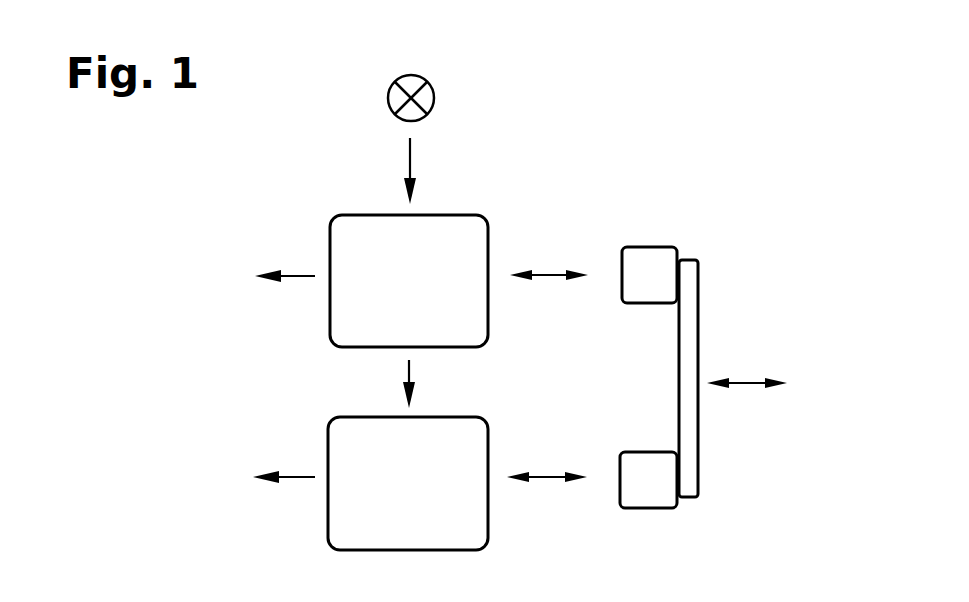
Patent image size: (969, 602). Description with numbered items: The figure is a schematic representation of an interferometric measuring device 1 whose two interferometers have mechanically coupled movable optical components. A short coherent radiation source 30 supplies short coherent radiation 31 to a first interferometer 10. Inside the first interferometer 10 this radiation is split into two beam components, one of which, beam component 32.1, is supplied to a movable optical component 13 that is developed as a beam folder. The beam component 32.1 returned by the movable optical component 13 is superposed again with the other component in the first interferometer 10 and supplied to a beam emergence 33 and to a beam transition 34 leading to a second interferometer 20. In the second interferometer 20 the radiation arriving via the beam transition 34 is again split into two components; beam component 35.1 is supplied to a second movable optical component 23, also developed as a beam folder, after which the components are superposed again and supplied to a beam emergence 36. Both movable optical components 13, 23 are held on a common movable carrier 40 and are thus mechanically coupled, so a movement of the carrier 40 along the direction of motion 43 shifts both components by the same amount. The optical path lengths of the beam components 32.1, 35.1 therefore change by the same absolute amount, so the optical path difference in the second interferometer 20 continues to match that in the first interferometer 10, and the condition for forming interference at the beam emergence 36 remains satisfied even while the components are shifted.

The interferometric measuring device 1 is at (514, 178).
The first interferometer 10 is at (330, 228).
The movable optical component 13 is at (650, 245).
The second interferometer 20 is at (328, 430).
The movable optical component 23 is at (672, 507).
The short coherent radiation source 30 is at (387, 100).
The short coherent radiation 31 is at (410, 150).
The beam component 32.1 is at (552, 275).
The beam emergence 33 is at (298, 276).
The beam transition 34 is at (409, 370).
The beam component 35.1 is at (550, 477).
The beam emergence 36 is at (290, 477).
The carrier 40 is at (688, 297).
The direction of motion 43 is at (750, 380).